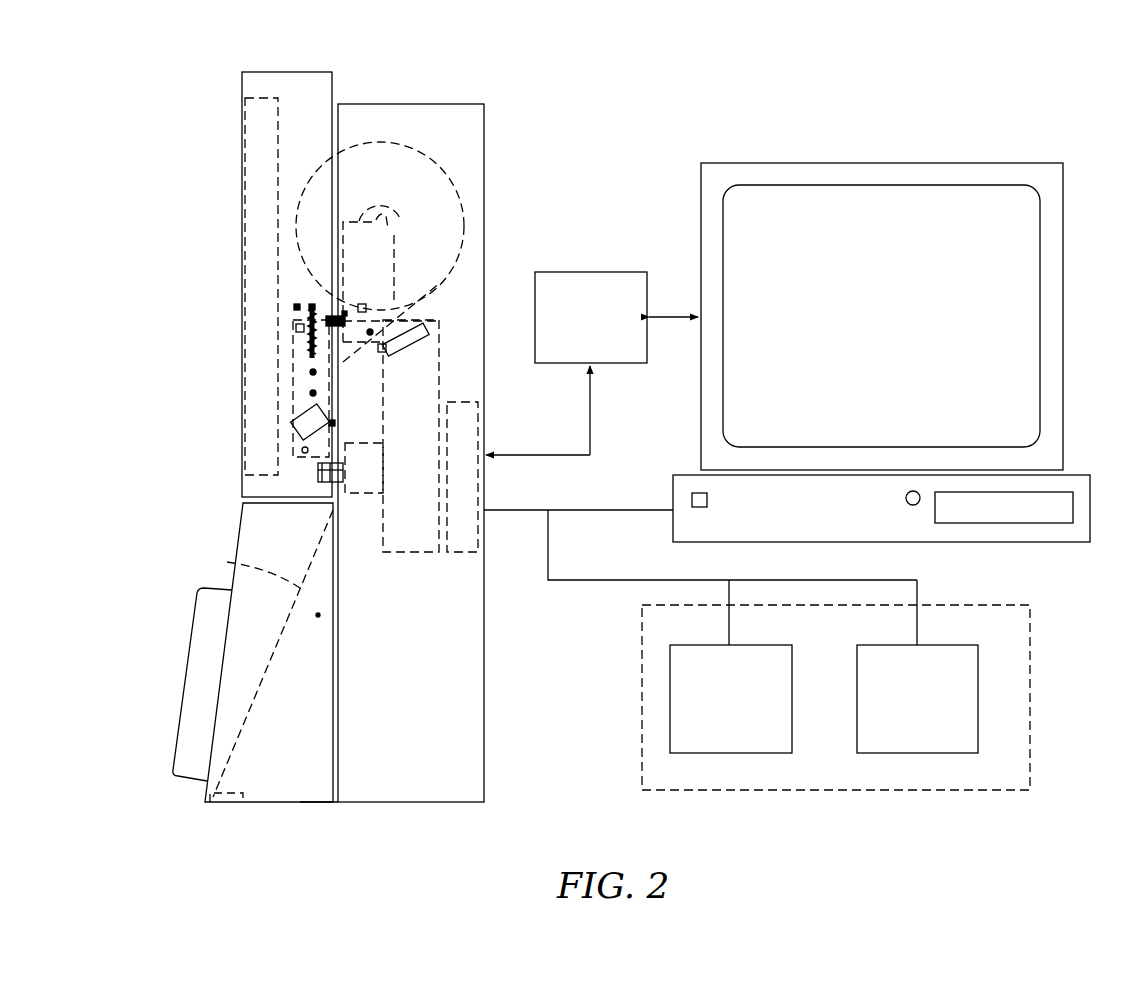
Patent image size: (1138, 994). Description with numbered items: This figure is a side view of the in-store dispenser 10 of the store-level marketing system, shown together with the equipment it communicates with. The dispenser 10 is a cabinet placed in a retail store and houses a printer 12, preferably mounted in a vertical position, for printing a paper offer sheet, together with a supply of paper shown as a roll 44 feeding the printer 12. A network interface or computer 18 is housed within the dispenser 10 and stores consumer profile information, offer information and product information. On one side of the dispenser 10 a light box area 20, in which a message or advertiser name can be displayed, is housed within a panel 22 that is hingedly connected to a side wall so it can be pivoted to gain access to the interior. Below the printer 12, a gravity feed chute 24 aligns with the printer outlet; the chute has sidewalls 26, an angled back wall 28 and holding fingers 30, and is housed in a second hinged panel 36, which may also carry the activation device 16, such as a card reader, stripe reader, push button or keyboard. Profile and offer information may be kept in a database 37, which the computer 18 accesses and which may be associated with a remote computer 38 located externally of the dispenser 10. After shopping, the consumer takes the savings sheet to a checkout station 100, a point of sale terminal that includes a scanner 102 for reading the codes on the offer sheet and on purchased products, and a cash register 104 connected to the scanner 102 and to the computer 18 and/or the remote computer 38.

The dispenser 10 is at (492, 101).
The printer 12 is at (484, 358).
The activation device 16 is at (198, 621).
The network interface or computer 18 is at (484, 418).
The light box area 20 is at (278, 188).
The panel 22 is at (332, 73).
The gravity feed chute 24 is at (265, 540).
The sidewalls 26 is at (250, 663).
The angled back wall 28 is at (246, 568).
The holding fingers 30 is at (225, 804).
The panel 36 is at (320, 803).
The database 37 is at (578, 352).
The remote computer 38 is at (856, 242).
The label roll 44 is at (465, 229).
The checkout station 100 is at (1030, 670).
The scanner 102 is at (745, 745).
The cash register 104 is at (935, 745).